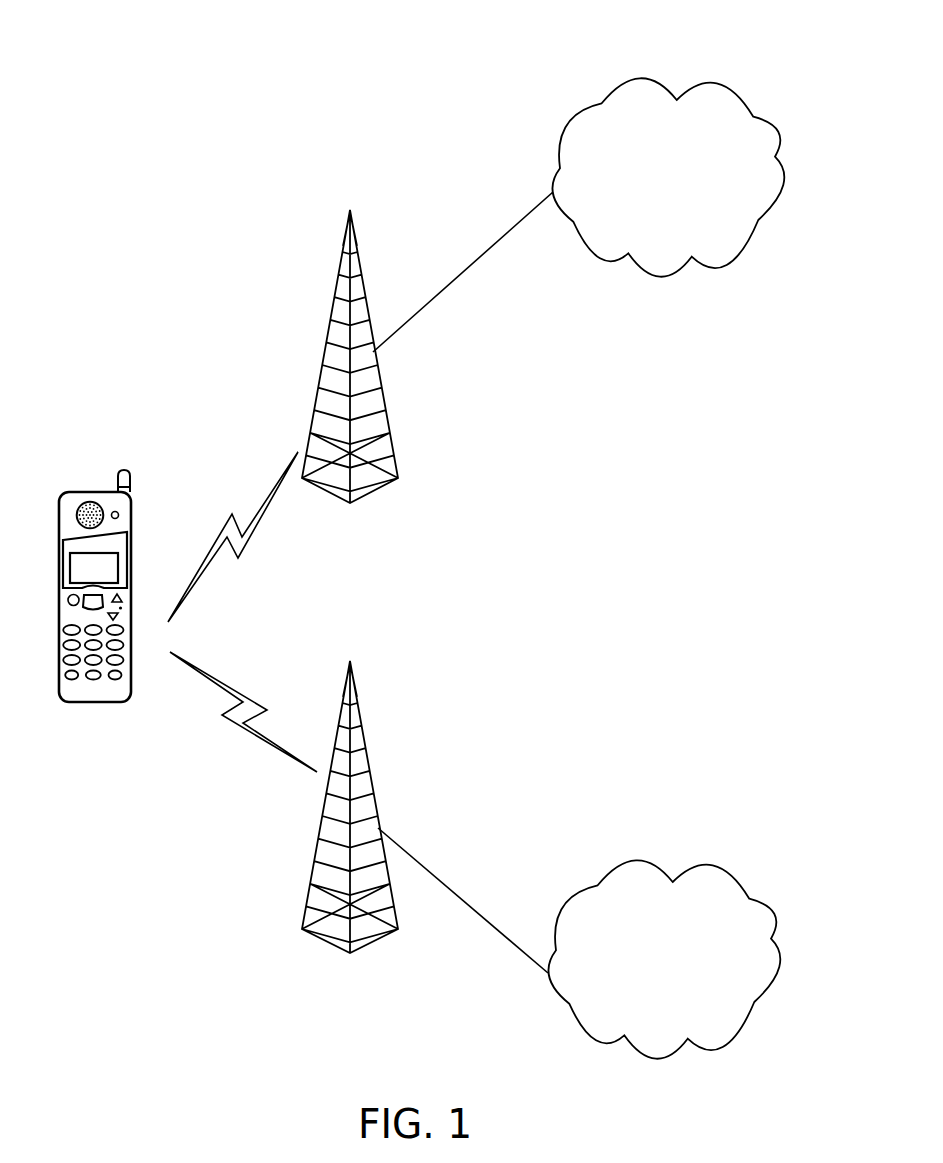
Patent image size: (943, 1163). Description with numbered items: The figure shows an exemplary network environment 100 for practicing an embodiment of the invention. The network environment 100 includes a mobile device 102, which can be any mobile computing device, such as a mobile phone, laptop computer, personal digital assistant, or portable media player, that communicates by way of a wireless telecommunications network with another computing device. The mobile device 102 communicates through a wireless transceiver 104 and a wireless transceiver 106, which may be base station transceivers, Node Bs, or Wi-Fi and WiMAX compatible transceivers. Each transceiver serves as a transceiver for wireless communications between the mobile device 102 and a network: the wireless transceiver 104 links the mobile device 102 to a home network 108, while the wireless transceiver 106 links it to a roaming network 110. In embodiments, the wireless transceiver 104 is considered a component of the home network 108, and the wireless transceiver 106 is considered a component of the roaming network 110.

The network environment 100 is at (817, 65).
The mobile device 102 is at (132, 607).
The wireless transceiver 104 is at (341, 253).
The wireless transceiver 106 is at (341, 706).
The home network 108 is at (758, 222).
The roaming network 110 is at (745, 1024).